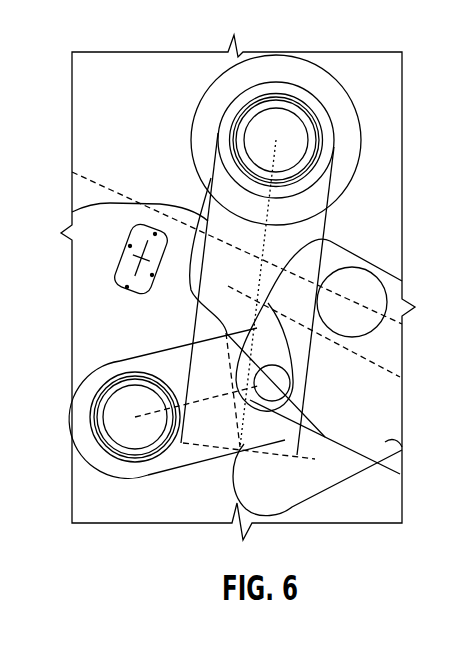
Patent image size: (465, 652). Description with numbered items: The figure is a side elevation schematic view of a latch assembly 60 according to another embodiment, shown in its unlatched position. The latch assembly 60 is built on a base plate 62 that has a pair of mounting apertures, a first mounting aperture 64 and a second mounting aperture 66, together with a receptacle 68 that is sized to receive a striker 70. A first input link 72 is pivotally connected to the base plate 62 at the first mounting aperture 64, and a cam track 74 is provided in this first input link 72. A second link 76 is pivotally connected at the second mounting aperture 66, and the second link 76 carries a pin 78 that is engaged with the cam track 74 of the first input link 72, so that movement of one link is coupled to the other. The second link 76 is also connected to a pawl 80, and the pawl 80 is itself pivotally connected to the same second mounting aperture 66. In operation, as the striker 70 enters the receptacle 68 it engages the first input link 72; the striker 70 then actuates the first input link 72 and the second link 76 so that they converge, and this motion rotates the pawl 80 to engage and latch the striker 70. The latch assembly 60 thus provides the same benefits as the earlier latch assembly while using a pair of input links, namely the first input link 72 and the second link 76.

The latch assembly 60 is at (411, 76).
The base plate 62 is at (392, 170).
The first mounting aperture 64 is at (243, 127).
The second mounting aperture 66 is at (113, 390).
The receptacle 68 is at (360, 452).
The striker 70 is at (372, 276).
The first input link 72 is at (214, 201).
The cam track 74 is at (286, 259).
The second link 76 is at (132, 358).
The pin 78 is at (290, 372).
The pawl 80 is at (114, 198).